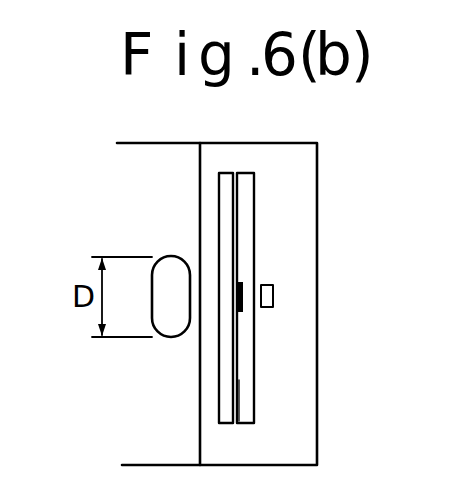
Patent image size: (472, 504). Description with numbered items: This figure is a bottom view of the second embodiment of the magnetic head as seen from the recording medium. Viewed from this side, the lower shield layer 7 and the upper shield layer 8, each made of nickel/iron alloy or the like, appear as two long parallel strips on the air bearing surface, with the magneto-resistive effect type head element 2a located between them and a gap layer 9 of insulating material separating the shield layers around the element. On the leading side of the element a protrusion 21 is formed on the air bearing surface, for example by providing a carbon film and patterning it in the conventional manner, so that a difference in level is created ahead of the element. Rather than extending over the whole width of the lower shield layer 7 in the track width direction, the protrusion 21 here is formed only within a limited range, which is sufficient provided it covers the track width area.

The lower shield layer 7 is at (228, 200).
The upper shield layer 8 is at (244, 222).
The magneto-resistive effect type head element 2a is at (242, 300).
The gap layer 9 is at (244, 402).
The protrusion 21 is at (171, 331).